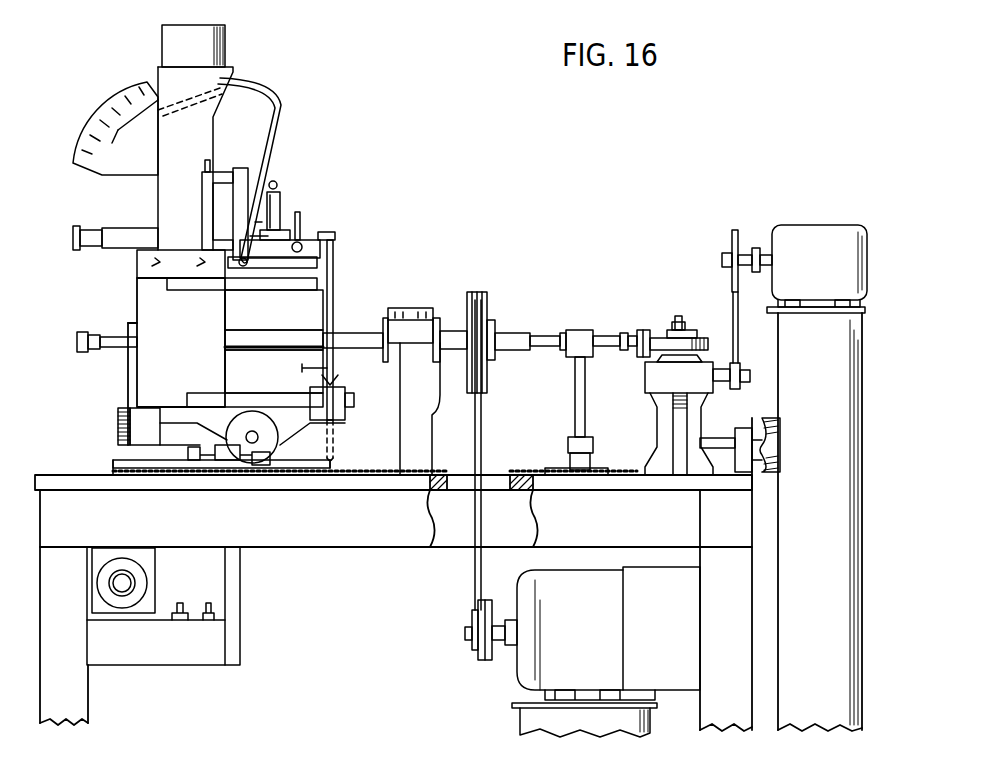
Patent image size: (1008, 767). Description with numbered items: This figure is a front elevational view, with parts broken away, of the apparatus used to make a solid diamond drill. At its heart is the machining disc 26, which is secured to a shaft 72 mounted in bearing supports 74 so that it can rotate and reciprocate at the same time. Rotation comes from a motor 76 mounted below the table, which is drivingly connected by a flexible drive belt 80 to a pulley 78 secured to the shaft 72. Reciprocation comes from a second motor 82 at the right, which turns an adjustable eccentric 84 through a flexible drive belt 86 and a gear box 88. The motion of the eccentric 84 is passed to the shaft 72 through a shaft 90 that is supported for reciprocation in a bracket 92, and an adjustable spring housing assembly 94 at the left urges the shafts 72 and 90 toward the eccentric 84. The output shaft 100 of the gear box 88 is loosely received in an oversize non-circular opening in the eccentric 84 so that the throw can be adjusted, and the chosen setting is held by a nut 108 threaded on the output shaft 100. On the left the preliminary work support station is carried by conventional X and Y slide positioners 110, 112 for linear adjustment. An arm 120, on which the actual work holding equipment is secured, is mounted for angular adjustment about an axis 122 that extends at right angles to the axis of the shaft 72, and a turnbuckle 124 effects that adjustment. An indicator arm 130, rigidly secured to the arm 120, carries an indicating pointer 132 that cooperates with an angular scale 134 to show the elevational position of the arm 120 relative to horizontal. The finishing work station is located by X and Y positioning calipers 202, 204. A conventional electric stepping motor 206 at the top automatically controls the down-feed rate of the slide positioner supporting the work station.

The machining disc 26 is at (343, 266).
The shaft 72 is at (285, 350).
The bearing supports 74 is at (412, 305).
The motor 76 is at (588, 623).
The pulley 78 is at (494, 306).
The flexible drive belt 80 is at (484, 455).
The motor 82 is at (832, 264).
The adjustable eccentric 84 is at (712, 352).
The flexible drive belt 86 is at (740, 352).
The gear box 88 is at (647, 378).
The shaft 90 is at (552, 333).
The bracket 92 is at (574, 392).
The adjustable spring housing assembly 94 is at (118, 348).
The output shaft 100 is at (672, 326).
The nut 108 is at (694, 334).
The X slide positioner 110 is at (138, 255).
The Y slide positioner 112 is at (128, 233).
The arm 120 is at (281, 270).
The axis 122 is at (241, 268).
The turnbuckle 124 is at (282, 203).
The indicator arm 130 is at (282, 147).
The indicating pointer 132 is at (112, 136).
The angular scale 134 is at (118, 107).
The X positioning caliper 202 is at (252, 458).
The Y positioning caliper 204 is at (114, 426).
The electric stepping motor 206 is at (228, 52).